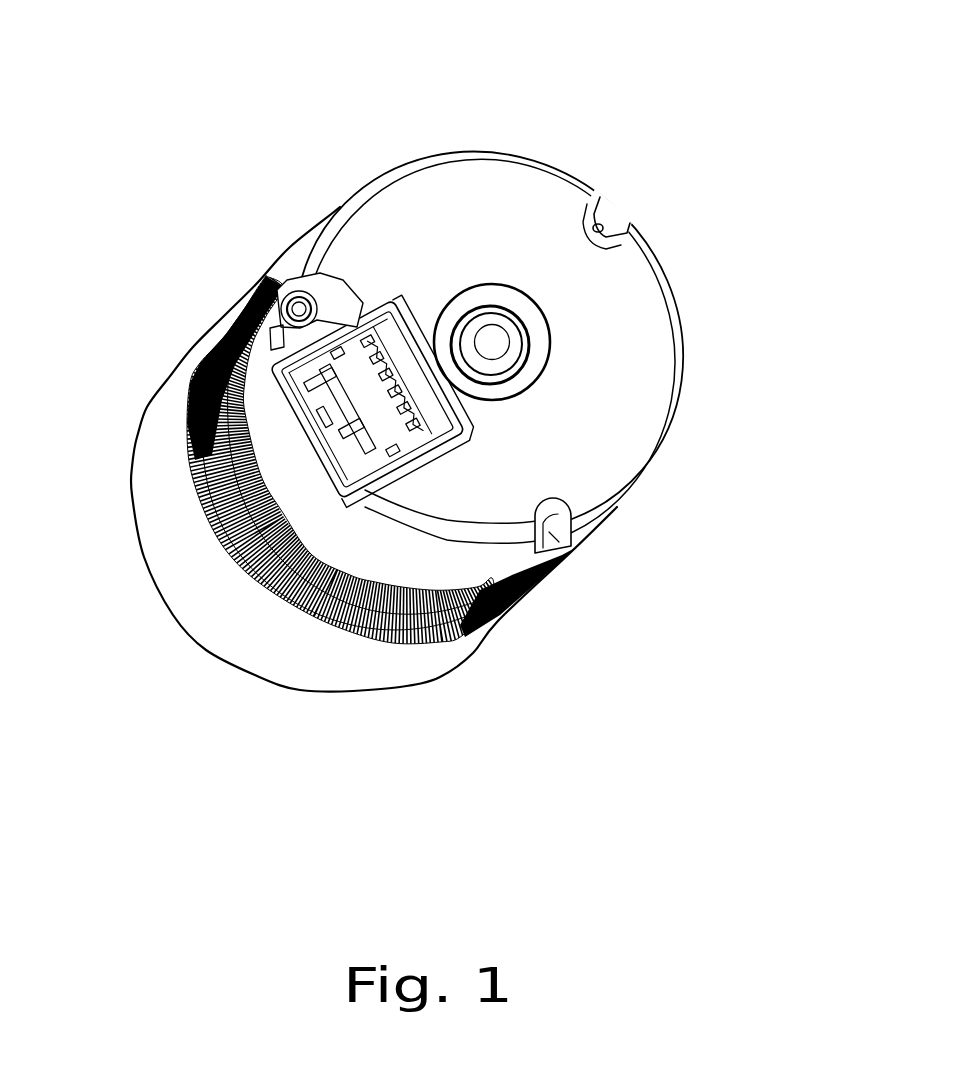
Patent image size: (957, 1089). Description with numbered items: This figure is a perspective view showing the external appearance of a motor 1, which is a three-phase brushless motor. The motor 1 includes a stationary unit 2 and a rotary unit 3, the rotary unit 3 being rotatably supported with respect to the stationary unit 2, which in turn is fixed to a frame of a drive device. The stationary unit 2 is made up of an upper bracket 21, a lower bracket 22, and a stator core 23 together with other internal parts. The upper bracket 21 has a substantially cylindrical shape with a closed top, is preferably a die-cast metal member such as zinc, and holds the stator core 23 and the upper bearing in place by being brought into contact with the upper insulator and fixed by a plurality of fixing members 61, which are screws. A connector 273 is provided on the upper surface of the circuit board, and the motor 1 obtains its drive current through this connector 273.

The motor 1 is at (82, 76).
The stationary unit 2 is at (528, 141).
The upper bracket 21 is at (608, 297).
The lower bracket 22 is at (335, 668).
The stator core 23 is at (487, 625).
The connector 273 is at (353, 378).
The fixing members 61 is at (296, 295).
The rotary unit 3 is at (498, 343).